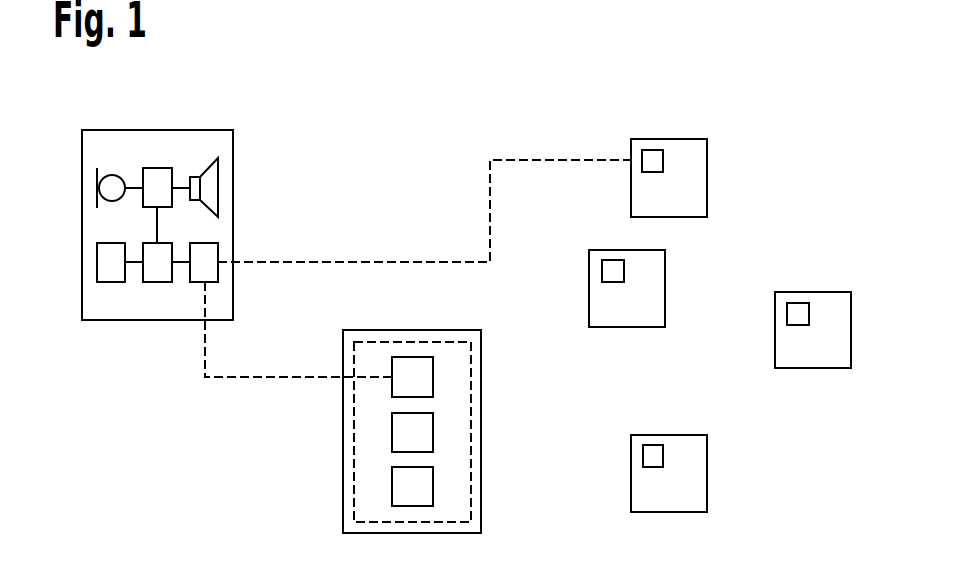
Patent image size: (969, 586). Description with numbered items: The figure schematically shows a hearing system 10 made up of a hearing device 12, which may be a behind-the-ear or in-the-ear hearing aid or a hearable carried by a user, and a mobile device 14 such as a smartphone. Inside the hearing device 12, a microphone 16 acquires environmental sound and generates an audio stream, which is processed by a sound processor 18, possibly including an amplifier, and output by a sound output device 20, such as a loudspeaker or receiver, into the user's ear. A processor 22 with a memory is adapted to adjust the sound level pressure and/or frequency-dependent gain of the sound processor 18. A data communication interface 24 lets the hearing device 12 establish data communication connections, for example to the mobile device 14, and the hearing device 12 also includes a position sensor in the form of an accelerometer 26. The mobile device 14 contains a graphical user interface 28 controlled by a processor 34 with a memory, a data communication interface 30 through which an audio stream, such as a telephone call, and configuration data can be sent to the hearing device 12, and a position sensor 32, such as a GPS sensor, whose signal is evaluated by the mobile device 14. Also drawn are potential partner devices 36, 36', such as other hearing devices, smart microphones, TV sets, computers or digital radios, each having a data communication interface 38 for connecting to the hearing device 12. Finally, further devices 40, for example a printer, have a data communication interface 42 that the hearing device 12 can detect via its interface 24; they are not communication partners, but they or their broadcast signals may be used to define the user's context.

The hearing system 10 is at (411, 223).
The hearing device 12 is at (233, 222).
The mobile device 14 is at (343, 421).
The microphone 16 is at (113, 174).
The sound processor 18 is at (157, 167).
The sound output device 20 is at (204, 165).
The processor 22 is at (160, 320).
The data communication interface 24 is at (218, 272).
The accelerometer 26 is at (113, 320).
The graphical user interface 28 is at (354, 457).
The data communication interface 30 is at (433, 377).
The position sensor 32 is at (433, 431).
The processor 34 is at (433, 486).
The potential partner device 36 is at (669, 140).
The potential partner device 36' is at (673, 288).
The data communication interface 38 is at (655, 150).
The further device 40 is at (838, 292).
The data communication interface 42 is at (800, 303).